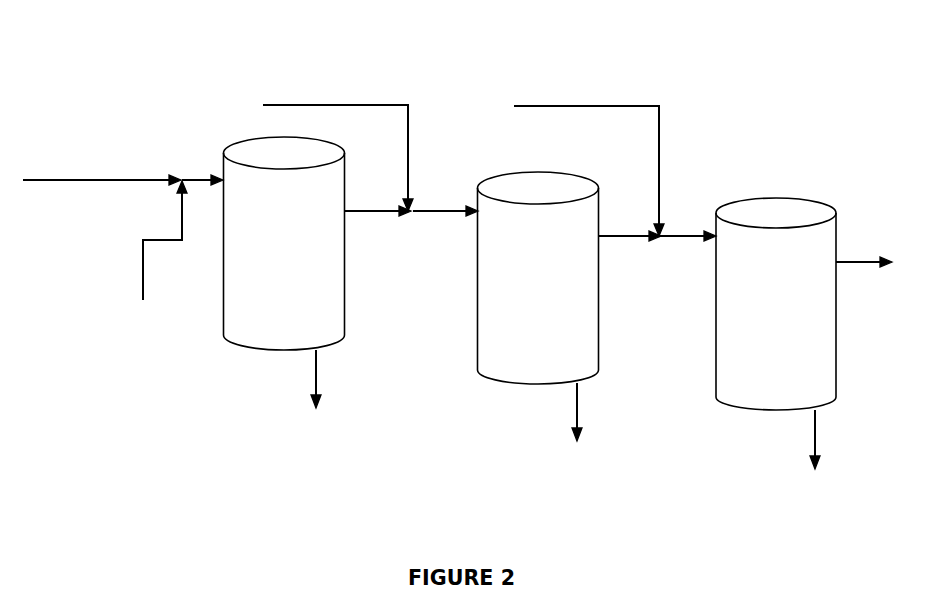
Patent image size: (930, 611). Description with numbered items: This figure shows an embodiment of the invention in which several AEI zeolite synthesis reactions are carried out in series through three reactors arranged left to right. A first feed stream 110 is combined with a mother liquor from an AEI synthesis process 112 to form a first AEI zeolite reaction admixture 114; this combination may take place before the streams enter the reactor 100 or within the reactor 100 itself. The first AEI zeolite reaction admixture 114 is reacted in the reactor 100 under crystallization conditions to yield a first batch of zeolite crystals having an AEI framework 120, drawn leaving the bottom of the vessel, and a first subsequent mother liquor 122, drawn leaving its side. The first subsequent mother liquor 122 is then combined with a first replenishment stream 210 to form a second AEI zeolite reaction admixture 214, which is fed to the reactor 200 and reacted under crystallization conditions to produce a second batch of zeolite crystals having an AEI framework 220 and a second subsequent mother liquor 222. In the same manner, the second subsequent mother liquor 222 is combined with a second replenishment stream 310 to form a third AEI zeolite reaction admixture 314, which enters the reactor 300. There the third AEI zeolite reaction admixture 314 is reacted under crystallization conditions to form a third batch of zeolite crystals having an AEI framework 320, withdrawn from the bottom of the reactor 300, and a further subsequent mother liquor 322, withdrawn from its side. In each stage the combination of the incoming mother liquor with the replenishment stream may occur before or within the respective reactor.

The reactor 100 is at (263, 328).
The first feed stream 110 is at (59, 178).
The mother liquor from an AEI synthesis process 112 is at (143, 262).
The first AEI zeolite reaction admixture 114 is at (197, 178).
The first batch of zeolite crystals having an AEI framework 120 is at (318, 375).
The first subsequent mother liquor 122 is at (383, 217).
The reactor 200 is at (510, 362).
The first replenishment stream 210 is at (395, 105).
The second AEI zeolite reaction admixture 214 is at (442, 222).
The second batch of zeolite crystals having an AEI framework 220 is at (577, 407).
The second subsequent mother liquor 222 is at (624, 230).
The reactor 300 is at (742, 385).
The second replenishment stream 310 is at (600, 106).
The third AEI zeolite reaction admixture 314 is at (690, 232).
The third batch of zeolite crystals having an AEI framework 320 is at (815, 438).
The subsequent mother liquor 322 is at (857, 257).